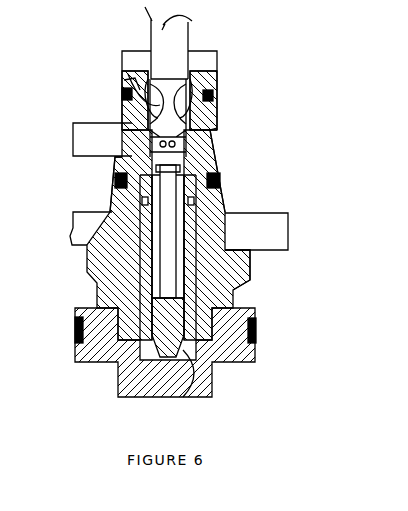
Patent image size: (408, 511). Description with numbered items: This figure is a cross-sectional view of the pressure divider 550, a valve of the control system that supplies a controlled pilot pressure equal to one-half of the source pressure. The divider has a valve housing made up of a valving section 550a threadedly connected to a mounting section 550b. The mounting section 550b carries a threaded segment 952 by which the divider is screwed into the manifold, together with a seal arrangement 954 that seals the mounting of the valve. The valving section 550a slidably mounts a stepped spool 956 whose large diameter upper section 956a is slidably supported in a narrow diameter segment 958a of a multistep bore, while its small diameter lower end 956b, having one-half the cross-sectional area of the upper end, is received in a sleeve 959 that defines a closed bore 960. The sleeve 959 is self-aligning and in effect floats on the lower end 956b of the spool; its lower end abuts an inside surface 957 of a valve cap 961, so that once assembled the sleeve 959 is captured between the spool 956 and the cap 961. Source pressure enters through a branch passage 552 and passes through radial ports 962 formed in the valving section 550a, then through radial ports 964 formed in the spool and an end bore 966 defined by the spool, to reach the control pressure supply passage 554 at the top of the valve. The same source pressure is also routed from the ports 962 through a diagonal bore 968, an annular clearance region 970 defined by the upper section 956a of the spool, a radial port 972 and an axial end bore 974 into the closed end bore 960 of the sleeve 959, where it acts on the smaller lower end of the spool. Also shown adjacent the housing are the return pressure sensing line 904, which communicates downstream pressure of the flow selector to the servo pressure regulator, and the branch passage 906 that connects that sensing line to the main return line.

The control pressure supply passage 554 is at (166, 25).
The upper section of spool 956a is at (160, 72).
The narrow diameter segment of multistep bore 958a is at (180, 78).
The valving section 550a is at (241, 93).
The end bore 966 is at (124, 81).
The radial ports 964 is at (122, 95).
The spool 956 is at (124, 115).
The radial ports 962 is at (212, 150).
The annular clearance region 970 is at (220, 157).
The pressure divider 550 is at (300, 150).
The diagonal bore 968 is at (213, 161).
The radial port 972 is at (220, 192).
The axial end bore 974 is at (165, 215).
The return pressure sensing line 904 is at (73, 242).
The branch passage 552 is at (108, 151).
The branch passage 906 is at (285, 246).
The lower end of spool 956b is at (198, 255).
The mounting section 550b is at (259, 263).
The threaded segment 952 is at (92, 263).
The sleeve 959 is at (183, 293).
The closed bore 960 is at (168, 327).
The seal arrangement 954 is at (256, 334).
The valve cap 961 is at (207, 380).
The inside surface of valve cap 957 is at (196, 372).